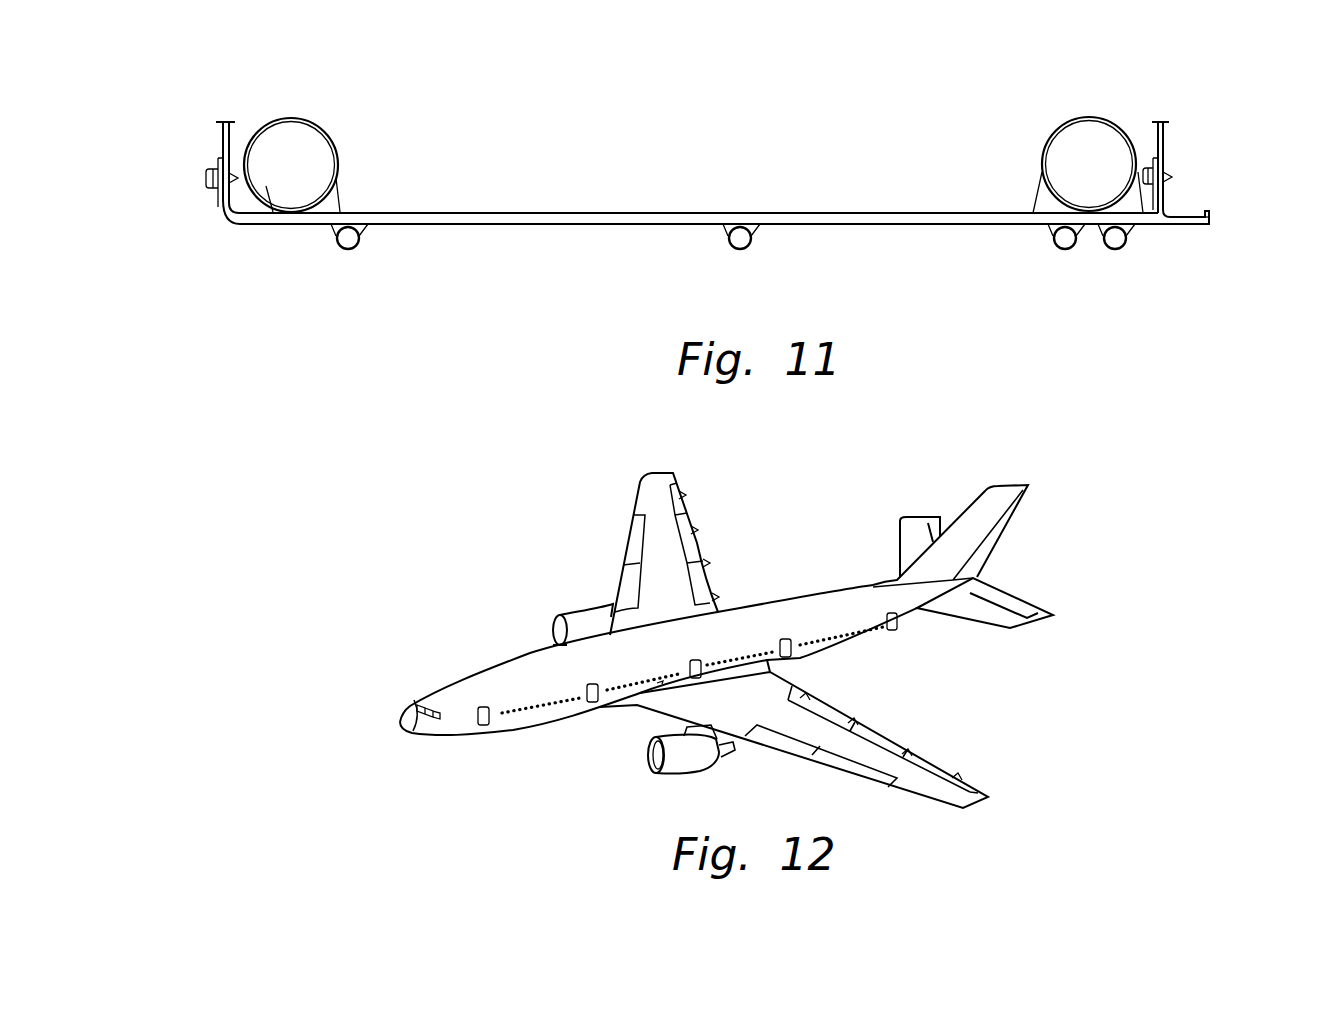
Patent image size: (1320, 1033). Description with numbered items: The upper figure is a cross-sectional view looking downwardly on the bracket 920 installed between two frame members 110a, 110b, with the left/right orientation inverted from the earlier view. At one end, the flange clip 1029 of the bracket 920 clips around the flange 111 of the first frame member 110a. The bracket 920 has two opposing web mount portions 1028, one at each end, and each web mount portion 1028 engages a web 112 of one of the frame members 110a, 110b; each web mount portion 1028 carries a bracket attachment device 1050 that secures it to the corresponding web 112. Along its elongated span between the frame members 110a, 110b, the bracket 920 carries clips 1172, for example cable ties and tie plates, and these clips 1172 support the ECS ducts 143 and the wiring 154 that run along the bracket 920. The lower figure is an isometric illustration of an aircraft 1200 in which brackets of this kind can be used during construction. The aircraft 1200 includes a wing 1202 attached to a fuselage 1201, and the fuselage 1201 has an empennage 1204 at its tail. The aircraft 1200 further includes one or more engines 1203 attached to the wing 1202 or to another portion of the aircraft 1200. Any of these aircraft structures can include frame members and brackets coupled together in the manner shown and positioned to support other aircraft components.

In FIG. 11, the bracket 920 is at (686, 163).
In FIG. 11, the flange 111 is at (1190, 214).
In FIG. 11, the first frame member 110a is at (1178, 140).
In FIG. 11, the second frame member 110b is at (240, 122).
In FIG. 11, the web 112 is at (232, 148).
In FIG. 11, the ECS duct 143 is at (340, 155).
In FIG. 11, the bracket attachment device 1050 is at (236, 180).
In FIG. 11, the web mount portion 1028 is at (217, 208).
In FIG. 11, the flange clip 1029 is at (1213, 221).
In FIG. 11, the wiring 154 is at (347, 251).
In FIG. 11, the clip 1172 is at (723, 232).
In FIG. 12, the aircraft 1200 is at (352, 626).
In FIG. 12, the fuselage 1201 is at (517, 732).
In FIG. 12, the wing 1202 is at (927, 796).
In FIG. 12, the engine 1203 is at (565, 614).
In FIG. 12, the empennage 1204 is at (1024, 578).